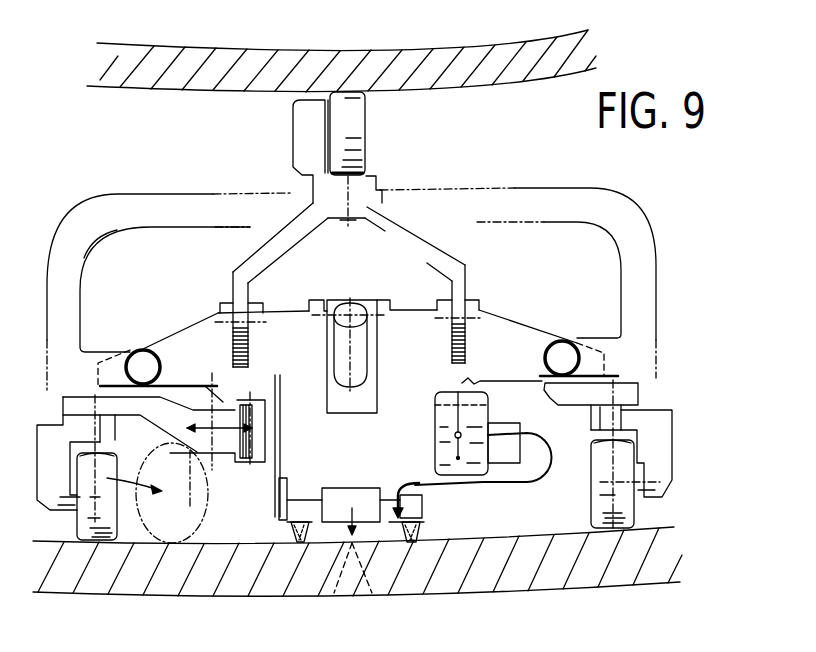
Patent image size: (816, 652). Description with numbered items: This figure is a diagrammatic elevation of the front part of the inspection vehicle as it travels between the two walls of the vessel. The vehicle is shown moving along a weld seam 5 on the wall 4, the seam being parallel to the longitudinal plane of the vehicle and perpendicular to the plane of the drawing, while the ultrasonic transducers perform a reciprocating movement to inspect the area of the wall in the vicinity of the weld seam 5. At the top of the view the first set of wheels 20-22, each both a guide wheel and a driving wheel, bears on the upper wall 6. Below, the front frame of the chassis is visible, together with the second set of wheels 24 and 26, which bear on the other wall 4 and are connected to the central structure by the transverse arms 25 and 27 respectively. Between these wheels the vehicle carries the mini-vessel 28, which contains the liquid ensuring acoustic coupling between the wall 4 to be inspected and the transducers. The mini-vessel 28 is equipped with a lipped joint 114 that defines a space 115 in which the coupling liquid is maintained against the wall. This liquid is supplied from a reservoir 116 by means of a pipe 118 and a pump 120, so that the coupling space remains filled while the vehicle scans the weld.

The wall 6 is at (237, 60).
The wheels 20-22 is at (360, 150).
The reservoir 116 is at (434, 413).
The transverse arm 25 is at (592, 393).
The space 115 is at (322, 533).
The pipe 118 is at (419, 483).
The transverse arm 27 is at (217, 446).
The pump 120 is at (507, 450).
The wheel 26 is at (88, 540).
The wall 4 is at (116, 580).
The mini-vessel 28 is at (302, 510).
The weld seam 5 is at (364, 580).
The lipped joint 114 is at (415, 530).
The wheel 24 is at (613, 518).